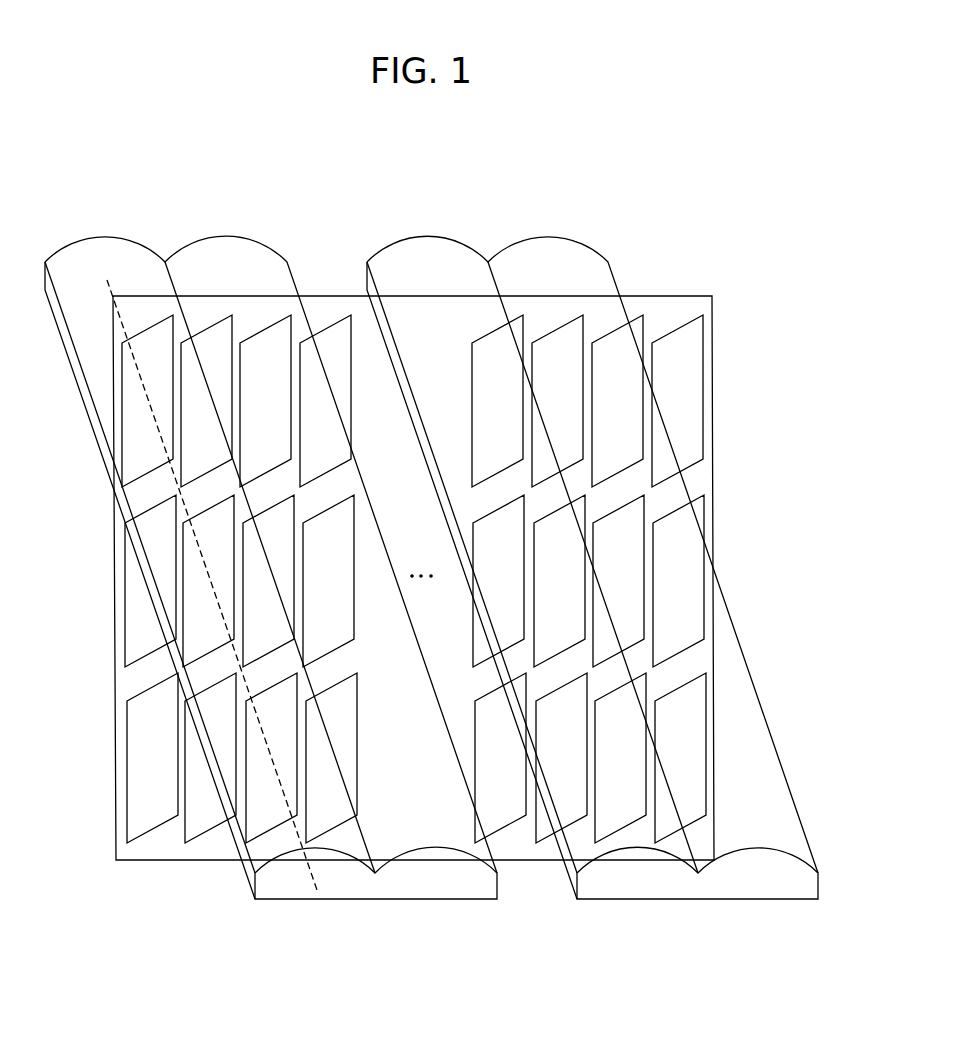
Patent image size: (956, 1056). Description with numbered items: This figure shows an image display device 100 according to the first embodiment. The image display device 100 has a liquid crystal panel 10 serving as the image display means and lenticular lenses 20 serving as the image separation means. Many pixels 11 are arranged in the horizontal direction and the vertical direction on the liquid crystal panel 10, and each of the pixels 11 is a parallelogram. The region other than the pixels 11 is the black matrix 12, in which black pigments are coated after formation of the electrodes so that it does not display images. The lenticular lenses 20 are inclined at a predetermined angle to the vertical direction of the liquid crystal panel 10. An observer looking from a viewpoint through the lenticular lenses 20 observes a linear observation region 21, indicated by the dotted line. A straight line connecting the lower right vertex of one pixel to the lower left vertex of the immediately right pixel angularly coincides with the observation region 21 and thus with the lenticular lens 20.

The image display device 100 is at (431, 536).
The liquid crystal panel 10 is at (668, 297).
The pixels 11 is at (693, 367).
The black matrix 12 is at (702, 478).
The lenticular lenses 20 is at (557, 235).
The observation region 21 is at (120, 312).